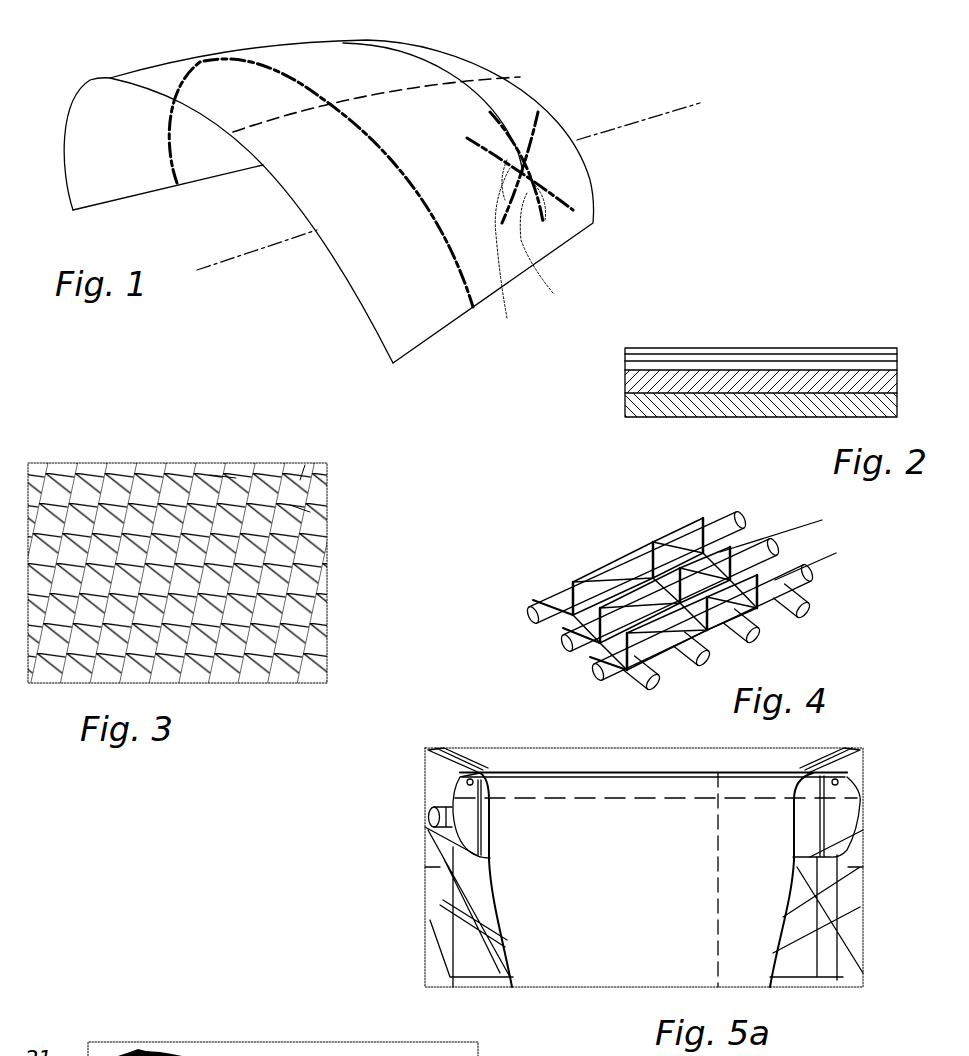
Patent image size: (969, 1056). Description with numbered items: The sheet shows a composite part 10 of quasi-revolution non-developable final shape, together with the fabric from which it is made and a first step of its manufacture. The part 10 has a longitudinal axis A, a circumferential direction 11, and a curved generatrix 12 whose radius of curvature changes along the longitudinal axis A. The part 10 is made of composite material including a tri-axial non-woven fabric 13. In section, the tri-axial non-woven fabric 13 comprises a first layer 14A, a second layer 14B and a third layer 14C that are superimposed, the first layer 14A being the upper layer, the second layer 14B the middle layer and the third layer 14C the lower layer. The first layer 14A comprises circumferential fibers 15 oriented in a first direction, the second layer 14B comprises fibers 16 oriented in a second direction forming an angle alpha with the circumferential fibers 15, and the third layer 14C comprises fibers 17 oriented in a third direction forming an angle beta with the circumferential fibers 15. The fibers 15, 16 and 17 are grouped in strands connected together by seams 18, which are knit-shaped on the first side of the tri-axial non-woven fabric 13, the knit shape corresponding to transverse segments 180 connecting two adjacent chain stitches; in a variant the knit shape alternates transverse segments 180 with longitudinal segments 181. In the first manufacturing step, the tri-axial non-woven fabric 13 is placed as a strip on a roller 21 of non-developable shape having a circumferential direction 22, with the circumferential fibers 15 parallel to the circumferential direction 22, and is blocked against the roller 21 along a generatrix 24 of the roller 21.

In FIG. 1, the part 10 is at (114, 50).
In FIG. 1, the circumferential direction 11 is at (455, 270).
In FIG. 1, the curved generatrix 12 is at (240, 132).
In FIG. 1, the tri-axial non-woven fabric 13 is at (390, 300).
In FIG. 2, the tri-axial non-woven fabric 13 is at (799, 335).
In FIG. 3, the tri-axial non-woven fabric 13 is at (145, 455).
In FIG. 4, the tri-axial non-woven fabric 13 is at (622, 542).
In FIG. 5A, the tri-axial non-woven fabric 13 is at (535, 878).
In FIG. 2, the first layer 14A is at (647, 348).
In FIG. 2, the second layer 14B is at (627, 387).
In FIG. 2, the third layer 14C is at (630, 407).
In FIG. 1, the circumferential fibers 15 is at (530, 200).
In FIG. 2, the circumferential fibers 15 is at (852, 360).
In FIG. 3, the circumferential fibers 15 is at (300, 480).
In FIG. 4, the circumferential fibers 15 is at (653, 643).
In FIG. 5A, the circumferential fibers 15 is at (850, 900).
In FIG. 1, the fibers 16 is at (543, 122).
In FIG. 2, the fibers 16 is at (897, 377).
In FIG. 1, the fibers 17 is at (550, 182).
In FIG. 2, the fibers 17 is at (817, 413).
In FIG. 3, the seams 18 is at (290, 505).
In FIG. 4, the seams 18 is at (767, 597).
In FIG. 3, the transverse segments 180 is at (237, 478).
In FIG. 4, the transverse segments 180 is at (690, 535).
In FIG. 4, the longitudinal segments 181 is at (587, 577).
In FIG. 5A, the roller 21 is at (466, 820).
In FIG. 5A, the circumferential direction 22 is at (833, 822).
In FIG. 5A, the generatrix 24 is at (573, 797).
In FIG. 1, the longitudinal axis A is at (685, 103).